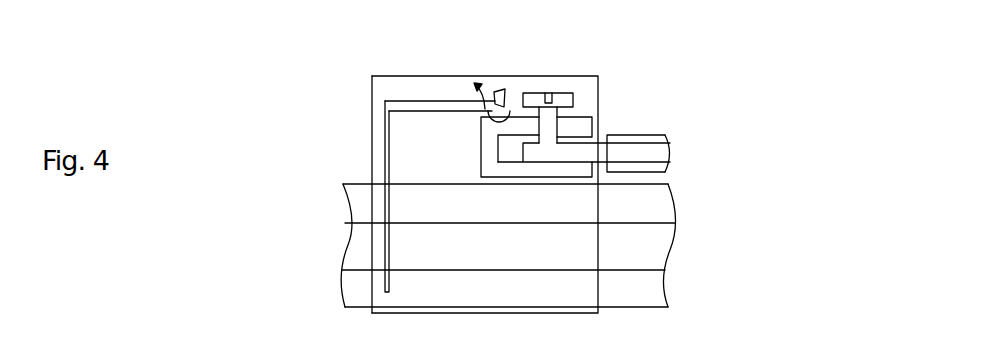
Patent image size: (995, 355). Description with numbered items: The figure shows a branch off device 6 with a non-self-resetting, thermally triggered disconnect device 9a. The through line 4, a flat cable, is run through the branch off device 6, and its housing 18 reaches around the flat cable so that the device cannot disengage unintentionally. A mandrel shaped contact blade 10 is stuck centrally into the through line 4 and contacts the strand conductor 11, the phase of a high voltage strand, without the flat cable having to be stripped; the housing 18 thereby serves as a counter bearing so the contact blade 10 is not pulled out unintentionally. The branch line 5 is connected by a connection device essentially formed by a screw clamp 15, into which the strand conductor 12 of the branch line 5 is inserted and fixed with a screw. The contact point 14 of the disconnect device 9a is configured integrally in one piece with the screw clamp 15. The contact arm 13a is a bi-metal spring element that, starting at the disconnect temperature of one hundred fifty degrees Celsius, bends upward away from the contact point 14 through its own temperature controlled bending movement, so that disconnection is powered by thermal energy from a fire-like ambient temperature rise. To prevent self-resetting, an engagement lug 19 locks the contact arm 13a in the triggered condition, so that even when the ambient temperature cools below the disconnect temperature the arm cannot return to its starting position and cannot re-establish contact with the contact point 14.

The through line 4 is at (692, 213).
The branch line 5 is at (637, 135).
The branch off device 6 is at (604, 70).
The disconnect device 9a is at (445, 89).
The contact blade 10 is at (383, 256).
The strand conductor 11 is at (660, 247).
The strand conductor 12 is at (648, 163).
The contact arm 13a is at (417, 107).
The contact point 14 is at (511, 113).
The screw clamp 15 is at (580, 112).
The housing 18 is at (372, 106).
The engagement lug 19 is at (498, 93).